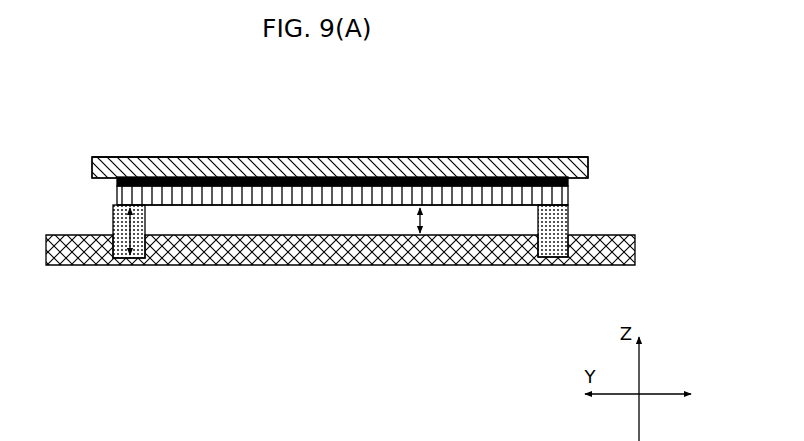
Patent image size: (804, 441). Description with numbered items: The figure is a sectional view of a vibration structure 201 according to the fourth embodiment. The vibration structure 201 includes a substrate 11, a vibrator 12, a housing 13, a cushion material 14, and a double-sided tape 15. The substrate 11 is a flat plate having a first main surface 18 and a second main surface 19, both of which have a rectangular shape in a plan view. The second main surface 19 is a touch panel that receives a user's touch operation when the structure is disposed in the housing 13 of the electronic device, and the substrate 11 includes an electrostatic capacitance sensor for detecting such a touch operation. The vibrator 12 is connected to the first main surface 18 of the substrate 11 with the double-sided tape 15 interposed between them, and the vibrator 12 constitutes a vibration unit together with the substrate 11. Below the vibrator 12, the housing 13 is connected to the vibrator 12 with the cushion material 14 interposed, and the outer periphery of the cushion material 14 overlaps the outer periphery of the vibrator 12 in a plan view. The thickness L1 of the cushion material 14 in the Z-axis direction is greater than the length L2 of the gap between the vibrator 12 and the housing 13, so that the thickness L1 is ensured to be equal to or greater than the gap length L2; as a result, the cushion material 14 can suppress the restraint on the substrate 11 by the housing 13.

The vibration structure 201 is at (169, 116).
The substrate 11 is at (478, 156).
The second main surface 19 is at (317, 155).
The double-sided tape 15 is at (502, 188).
The vibrator 12 is at (282, 208).
The first main surface 18 is at (190, 207).
The cushion material 14 is at (112, 232).
The housing 13 is at (100, 266).
The thickness of the cushion material L1 is at (113, 218).
The length of the gap L2 is at (417, 213).